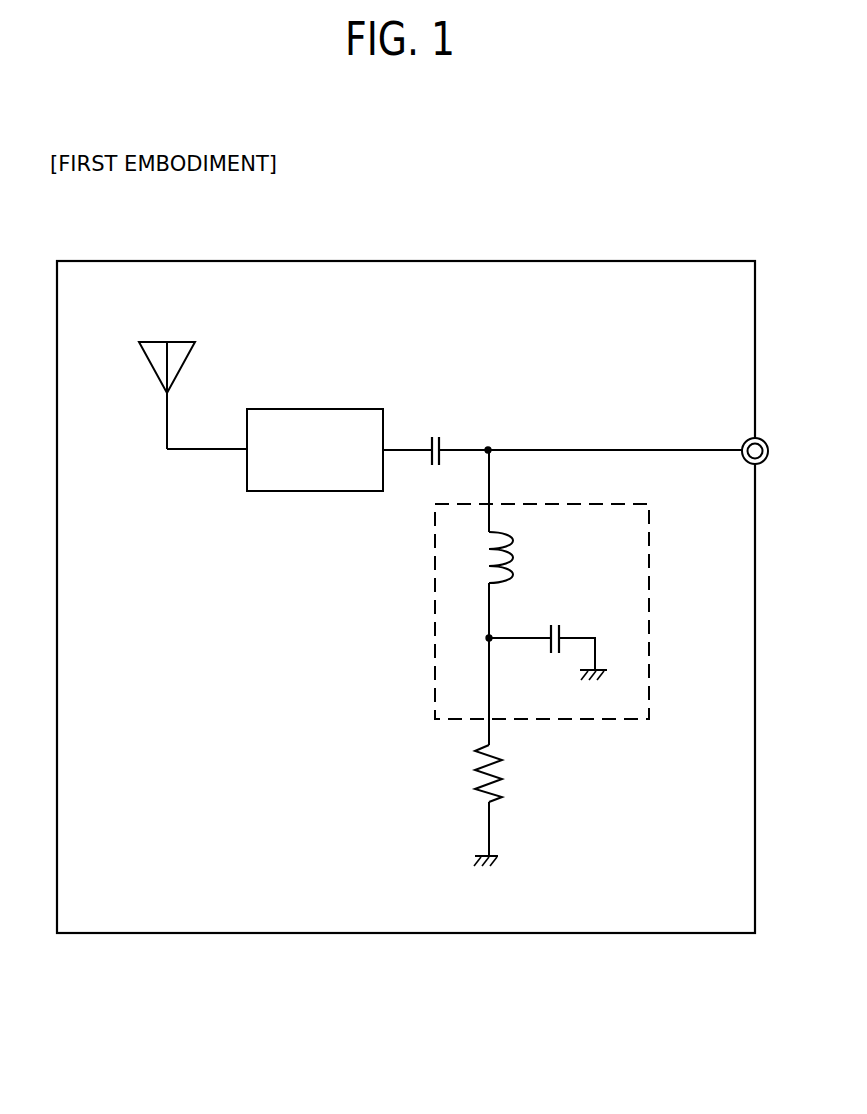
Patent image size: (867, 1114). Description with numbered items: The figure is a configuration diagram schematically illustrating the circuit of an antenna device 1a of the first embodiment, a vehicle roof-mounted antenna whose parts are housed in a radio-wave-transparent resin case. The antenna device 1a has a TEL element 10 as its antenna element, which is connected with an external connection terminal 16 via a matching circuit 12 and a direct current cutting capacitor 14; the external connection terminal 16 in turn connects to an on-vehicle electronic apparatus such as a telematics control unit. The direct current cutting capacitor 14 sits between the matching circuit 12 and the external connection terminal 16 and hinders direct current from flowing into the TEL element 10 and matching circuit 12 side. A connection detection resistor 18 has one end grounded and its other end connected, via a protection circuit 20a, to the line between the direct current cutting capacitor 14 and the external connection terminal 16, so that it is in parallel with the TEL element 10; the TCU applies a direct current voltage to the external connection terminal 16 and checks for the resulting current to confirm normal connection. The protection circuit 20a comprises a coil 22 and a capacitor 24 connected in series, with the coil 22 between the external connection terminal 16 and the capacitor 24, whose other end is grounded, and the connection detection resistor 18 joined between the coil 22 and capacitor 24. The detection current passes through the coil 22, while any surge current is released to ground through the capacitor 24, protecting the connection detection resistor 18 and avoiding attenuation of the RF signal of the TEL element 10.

The antenna device 1a is at (570, 260).
The TEL element 10 is at (155, 342).
The matching circuit 12 is at (327, 406).
The direct current cutting capacitor 14 is at (440, 443).
The external connection terminal 16 is at (746, 438).
The connection detection resistor 18 is at (480, 773).
The protection circuit 20a is at (650, 559).
The coil 22 is at (513, 569).
The capacitor 24 is at (550, 649).